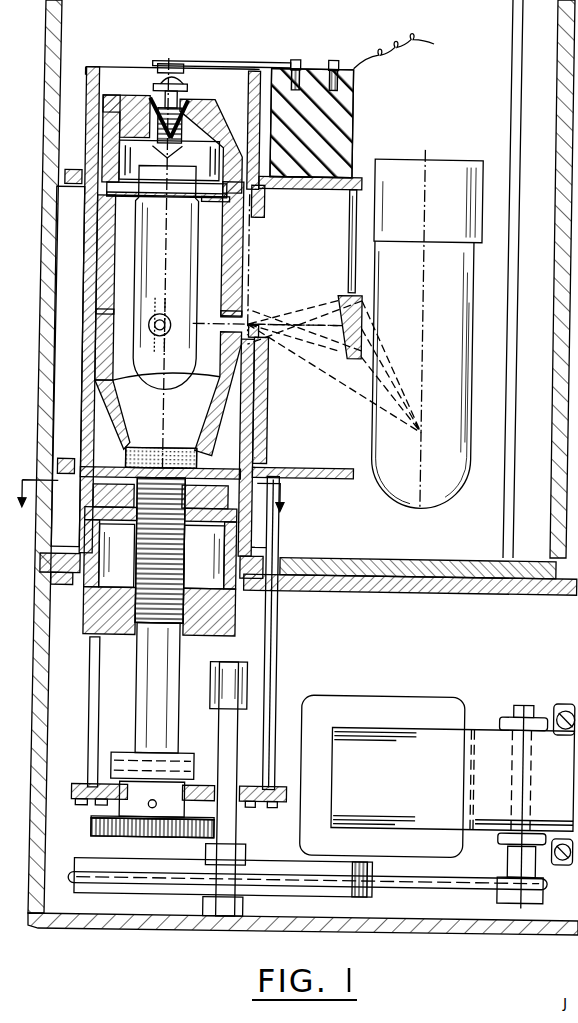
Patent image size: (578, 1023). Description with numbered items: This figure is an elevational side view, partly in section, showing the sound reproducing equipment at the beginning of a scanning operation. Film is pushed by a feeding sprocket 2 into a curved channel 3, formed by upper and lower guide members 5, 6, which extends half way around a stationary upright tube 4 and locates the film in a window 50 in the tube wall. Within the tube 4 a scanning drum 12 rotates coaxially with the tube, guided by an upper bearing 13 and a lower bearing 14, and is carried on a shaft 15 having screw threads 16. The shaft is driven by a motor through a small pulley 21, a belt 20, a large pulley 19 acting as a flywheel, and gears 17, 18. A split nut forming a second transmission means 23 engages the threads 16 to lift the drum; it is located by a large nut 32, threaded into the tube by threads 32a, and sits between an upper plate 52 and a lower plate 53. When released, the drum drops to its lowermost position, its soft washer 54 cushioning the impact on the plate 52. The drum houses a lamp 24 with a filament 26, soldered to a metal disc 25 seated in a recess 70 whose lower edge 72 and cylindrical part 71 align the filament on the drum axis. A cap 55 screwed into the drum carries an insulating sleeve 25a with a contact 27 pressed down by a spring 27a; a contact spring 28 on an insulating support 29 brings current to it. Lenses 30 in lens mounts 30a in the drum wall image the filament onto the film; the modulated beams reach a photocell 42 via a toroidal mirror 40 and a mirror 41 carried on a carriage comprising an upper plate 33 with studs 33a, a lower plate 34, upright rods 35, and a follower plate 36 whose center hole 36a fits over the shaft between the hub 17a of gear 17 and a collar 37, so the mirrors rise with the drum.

The feeding sprocket 2 is at (153, 487).
The channel 3 is at (248, 322).
The tube 4 is at (253, 92).
The upper guide member 5 is at (262, 208).
The lower guide member 6 is at (258, 328).
The scanning drum 12 is at (236, 244).
The upper bearing 13 is at (90, 190).
The lower bearing 14 is at (135, 605).
The shaft 15 is at (150, 675).
The screw threads 16 is at (185, 560).
The gear 17 is at (105, 838).
The hub 17a is at (142, 838).
The gear 18 is at (243, 826).
The large pulley 19 is at (308, 896).
The belt 20 is at (415, 885).
The small pulley 21 is at (540, 888).
The second transmission means 23 is at (230, 505).
The lamp 24 is at (135, 270).
The metal disc 25 is at (118, 200).
The insulating sleeve 25a is at (130, 140).
The filament 26 is at (150, 340).
The contact 27 is at (150, 88).
The spring 27a is at (180, 105).
The contact spring 28 is at (200, 63).
The insulating support 29 is at (350, 100).
The lenses 30 is at (105, 345).
The lens mount 30a is at (214, 388).
The large nut 32 is at (266, 602).
The threads 32a is at (268, 545).
The upper plate 33 is at (314, 190).
The studs 33a is at (346, 250).
The lower plate 34 is at (318, 468).
The upright rods 35 is at (280, 646).
The follower plate 36 is at (80, 795).
The center hole 36a is at (130, 810).
The collar 37 is at (120, 756).
The toroidal mirror 40 is at (338, 315).
The mirror 41 is at (266, 408).
The photocell 42 is at (466, 440).
The window 50 is at (248, 285).
The upper plate 52 is at (66, 366).
The lower plate 53 is at (92, 515).
The soft washer 54 is at (124, 462).
The cap 55 is at (215, 135).
The recess 70 is at (100, 178).
The cylindrical part 71 is at (208, 190).
The lower edge 72 is at (212, 206).